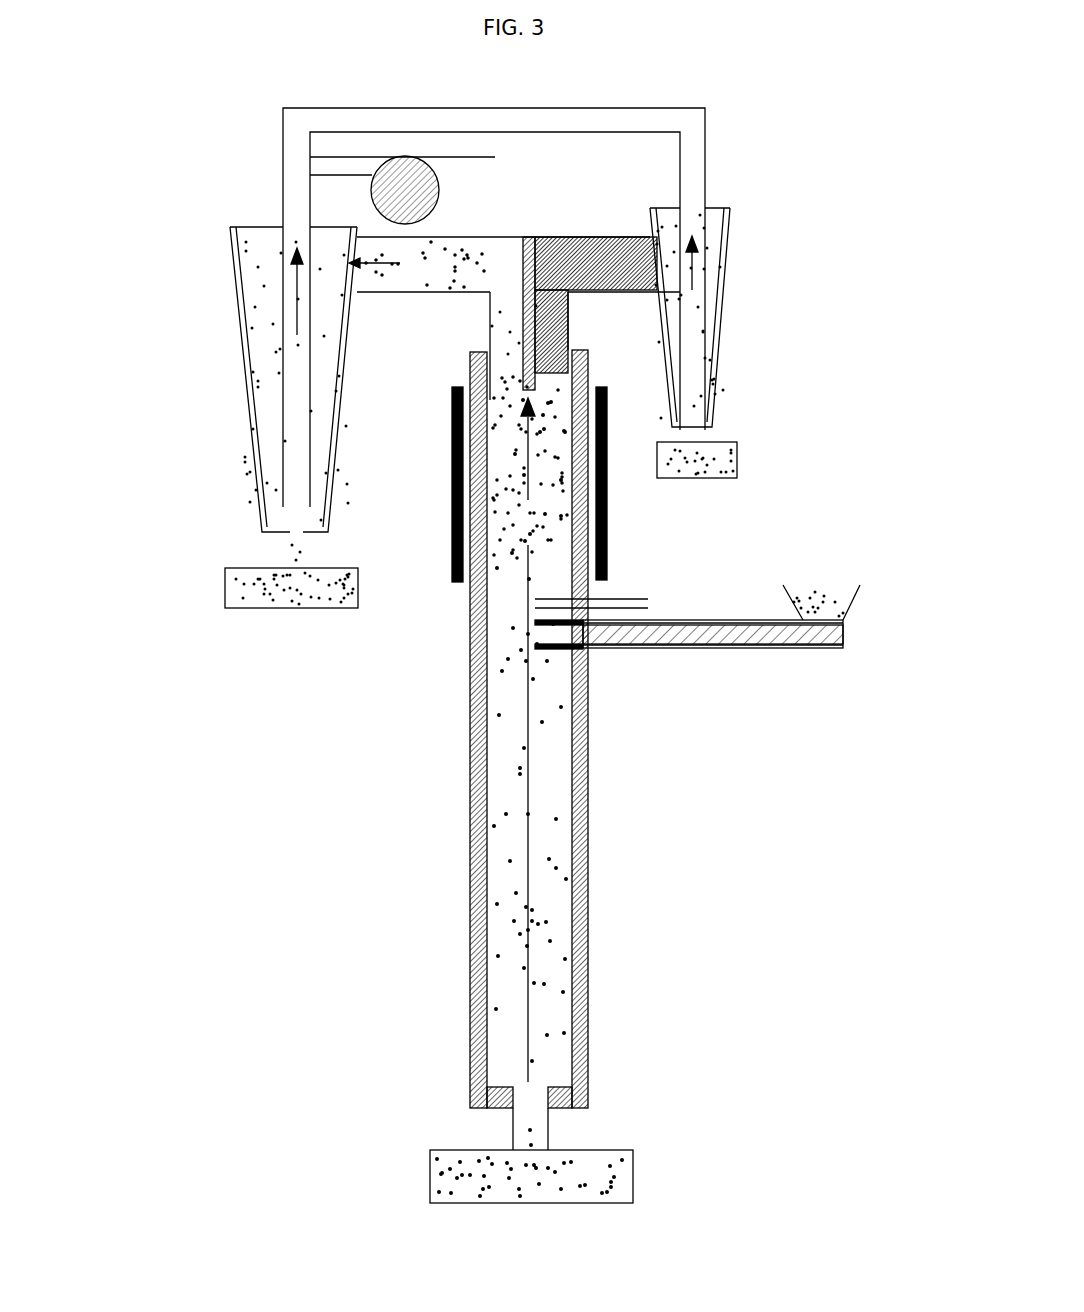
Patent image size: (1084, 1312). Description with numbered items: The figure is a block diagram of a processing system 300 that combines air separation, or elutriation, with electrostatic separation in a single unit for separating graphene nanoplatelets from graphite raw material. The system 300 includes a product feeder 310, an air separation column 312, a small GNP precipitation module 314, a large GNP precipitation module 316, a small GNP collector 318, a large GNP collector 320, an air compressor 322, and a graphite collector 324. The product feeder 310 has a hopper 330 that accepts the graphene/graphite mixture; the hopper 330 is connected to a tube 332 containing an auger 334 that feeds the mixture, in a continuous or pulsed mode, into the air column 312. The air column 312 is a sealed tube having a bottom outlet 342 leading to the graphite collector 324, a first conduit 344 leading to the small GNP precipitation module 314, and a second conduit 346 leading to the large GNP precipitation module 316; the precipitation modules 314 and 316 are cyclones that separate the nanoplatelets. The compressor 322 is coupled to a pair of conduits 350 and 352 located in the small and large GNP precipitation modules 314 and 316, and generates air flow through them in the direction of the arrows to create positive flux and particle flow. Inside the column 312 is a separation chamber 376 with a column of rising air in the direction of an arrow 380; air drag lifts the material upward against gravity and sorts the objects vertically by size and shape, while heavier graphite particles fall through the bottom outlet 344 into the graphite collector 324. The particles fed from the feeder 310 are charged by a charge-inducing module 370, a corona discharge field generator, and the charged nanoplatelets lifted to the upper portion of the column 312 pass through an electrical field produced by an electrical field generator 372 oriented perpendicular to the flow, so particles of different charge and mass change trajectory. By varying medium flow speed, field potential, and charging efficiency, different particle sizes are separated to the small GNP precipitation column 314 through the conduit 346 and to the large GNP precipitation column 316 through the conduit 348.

The system 300 is at (258, 153).
The product feeder 310 is at (735, 650).
The air separation column 312 is at (588, 853).
The small GNP precipitation module 314 is at (265, 338).
The large GNP precipitation module 316 is at (713, 285).
The small GNP collector 318 is at (235, 604).
The large GNP collector 320 is at (733, 458).
The air compressor 322 is at (437, 185).
The graphite collector 324 is at (630, 1160).
The hopper 330 is at (838, 586).
The tube 332 is at (720, 617).
The auger 334 is at (788, 634).
The bottom outlet 342 is at (650, 596).
The first conduit 344 is at (540, 1107).
The second conduit 346 is at (504, 350).
The conduit 348 is at (555, 366).
The conduit 350 is at (282, 270).
The conduit 352 is at (706, 185).
The charge-inducing module 370 is at (582, 654).
The electrical field generator 372 is at (610, 425).
The separation chamber 376 is at (505, 745).
The arrow 380 is at (525, 822).